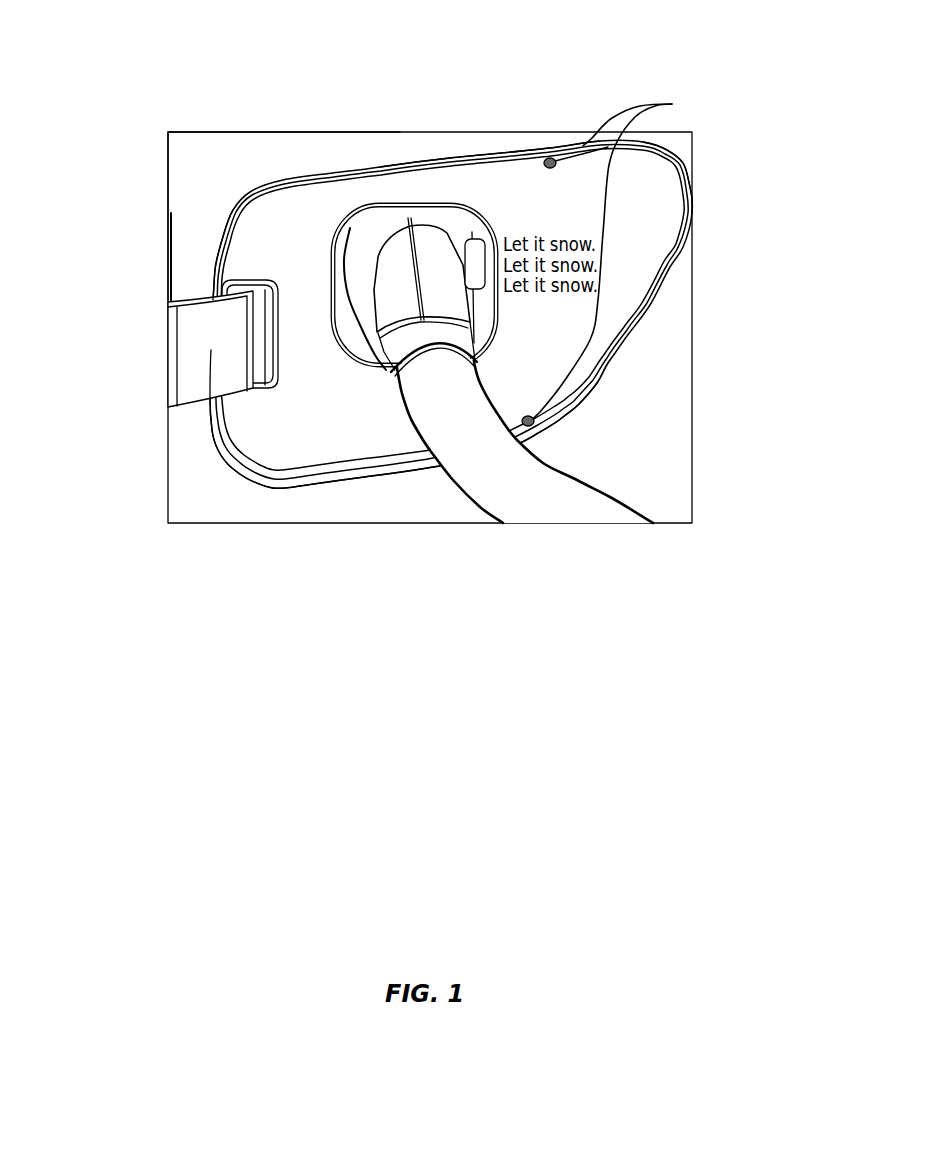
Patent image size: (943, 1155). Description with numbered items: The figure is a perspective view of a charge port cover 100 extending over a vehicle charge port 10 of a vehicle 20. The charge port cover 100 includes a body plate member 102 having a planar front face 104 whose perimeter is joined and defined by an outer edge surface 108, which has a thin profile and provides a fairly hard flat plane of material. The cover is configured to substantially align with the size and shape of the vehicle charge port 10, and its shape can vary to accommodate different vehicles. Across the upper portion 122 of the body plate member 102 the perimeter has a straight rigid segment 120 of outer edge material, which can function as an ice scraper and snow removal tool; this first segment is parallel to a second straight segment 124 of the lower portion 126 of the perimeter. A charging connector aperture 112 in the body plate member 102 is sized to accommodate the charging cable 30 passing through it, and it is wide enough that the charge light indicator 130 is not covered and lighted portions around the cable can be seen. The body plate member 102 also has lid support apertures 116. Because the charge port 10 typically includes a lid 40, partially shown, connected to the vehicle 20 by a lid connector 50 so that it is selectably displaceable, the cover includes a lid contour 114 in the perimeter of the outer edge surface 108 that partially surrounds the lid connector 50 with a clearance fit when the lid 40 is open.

The vehicle charge port 10 is at (217, 448).
The vehicle 20 is at (660, 392).
The charging cable 30 is at (473, 472).
The lid 40 is at (163, 253).
The lid connector 50 is at (173, 378).
The charge port cover 100 is at (656, 313).
The body plate member 102 is at (273, 437).
The planar front face 104 is at (347, 413).
The outer edge surface 108 is at (668, 153).
The charging connector aperture 112 is at (446, 230).
The lid contour 114 is at (218, 279).
The lid support apertures 116 is at (619, 259).
The straight rigid segment 120 is at (495, 157).
The upper portion 122 is at (231, 181).
The second straight segment 124 is at (363, 473).
The lower portion 126 is at (578, 437).
The charge light indicator 130 is at (487, 243).